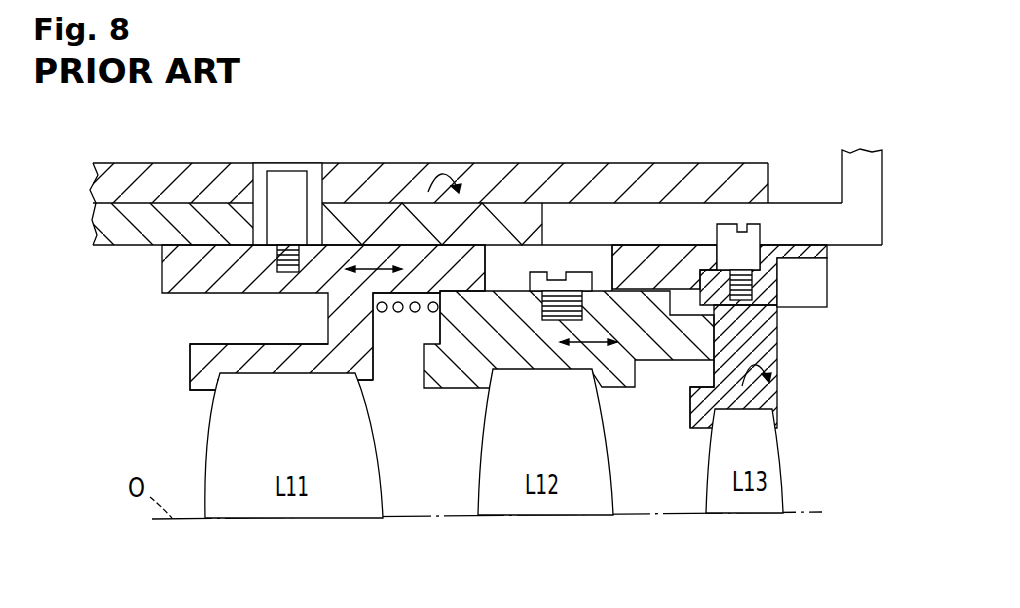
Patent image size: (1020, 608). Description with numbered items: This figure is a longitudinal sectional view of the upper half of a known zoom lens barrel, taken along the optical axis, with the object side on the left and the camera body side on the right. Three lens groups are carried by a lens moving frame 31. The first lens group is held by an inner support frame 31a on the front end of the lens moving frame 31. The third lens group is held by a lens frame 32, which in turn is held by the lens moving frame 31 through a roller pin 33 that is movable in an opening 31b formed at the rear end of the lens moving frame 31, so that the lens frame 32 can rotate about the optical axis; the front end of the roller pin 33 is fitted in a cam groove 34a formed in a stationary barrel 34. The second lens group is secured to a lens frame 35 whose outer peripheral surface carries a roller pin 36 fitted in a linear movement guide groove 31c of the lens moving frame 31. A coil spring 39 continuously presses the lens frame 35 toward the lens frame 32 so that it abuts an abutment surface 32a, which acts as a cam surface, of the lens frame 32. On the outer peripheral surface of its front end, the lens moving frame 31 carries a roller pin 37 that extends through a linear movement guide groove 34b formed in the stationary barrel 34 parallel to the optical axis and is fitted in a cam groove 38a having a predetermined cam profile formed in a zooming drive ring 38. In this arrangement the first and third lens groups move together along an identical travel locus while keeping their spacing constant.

The lens moving frame 31 is at (172, 292).
The inner support frame 31a is at (188, 364).
The opening 31b is at (727, 227).
The linear movement guide groove 31c is at (497, 270).
The lens frame 32 is at (778, 403).
The abutment surface 32a is at (714, 370).
The roller pin 33 is at (762, 228).
The stationary barrel 34 is at (473, 217).
The cam groove 34a is at (658, 223).
The linear movement guide groove 34b is at (327, 212).
The lens frame 35 is at (440, 381).
The roller pin 36 is at (548, 277).
The roller pin 37 is at (294, 182).
The zooming drive ring 38 is at (195, 170).
The cam groove 38a is at (254, 172).
The coil spring 39 is at (398, 313).